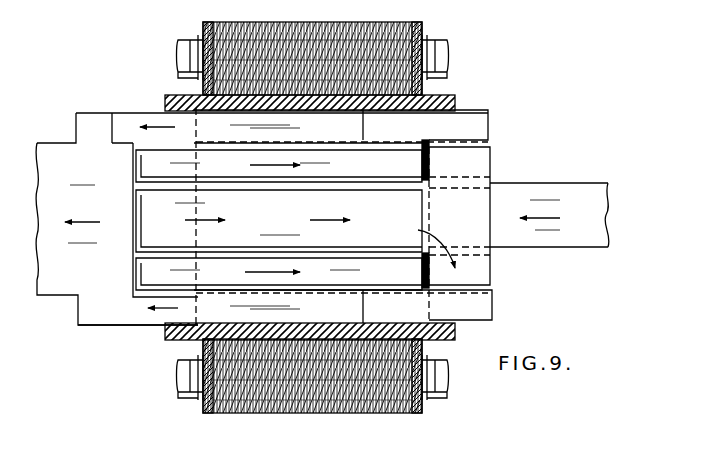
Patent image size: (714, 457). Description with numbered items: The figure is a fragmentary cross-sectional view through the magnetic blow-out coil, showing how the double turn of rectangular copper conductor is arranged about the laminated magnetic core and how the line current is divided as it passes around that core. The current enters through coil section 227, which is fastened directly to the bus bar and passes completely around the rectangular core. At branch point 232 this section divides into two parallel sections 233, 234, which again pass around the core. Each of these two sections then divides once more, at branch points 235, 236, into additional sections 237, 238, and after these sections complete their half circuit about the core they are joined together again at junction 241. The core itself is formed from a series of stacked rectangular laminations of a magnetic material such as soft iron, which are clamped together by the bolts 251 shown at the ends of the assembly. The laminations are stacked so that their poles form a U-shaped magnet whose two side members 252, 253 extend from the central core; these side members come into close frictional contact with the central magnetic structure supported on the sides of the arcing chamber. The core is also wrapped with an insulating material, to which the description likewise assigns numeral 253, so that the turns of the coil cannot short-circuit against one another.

The coil section 227 is at (553, 192).
The branch point 232 is at (457, 172).
The parallel coil section 233 is at (430, 158).
The parallel coil section 234 is at (430, 273).
The branch point 235 is at (430, 300).
The branch point 236 is at (430, 127).
The additional coil section 237 is at (146, 318).
The additional coil section 238 is at (128, 120).
The junction 241 is at (84, 214).
The bolts 251 is at (178, 56).
The side member 252 is at (352, 414).
The side member 253 is at (330, 22).